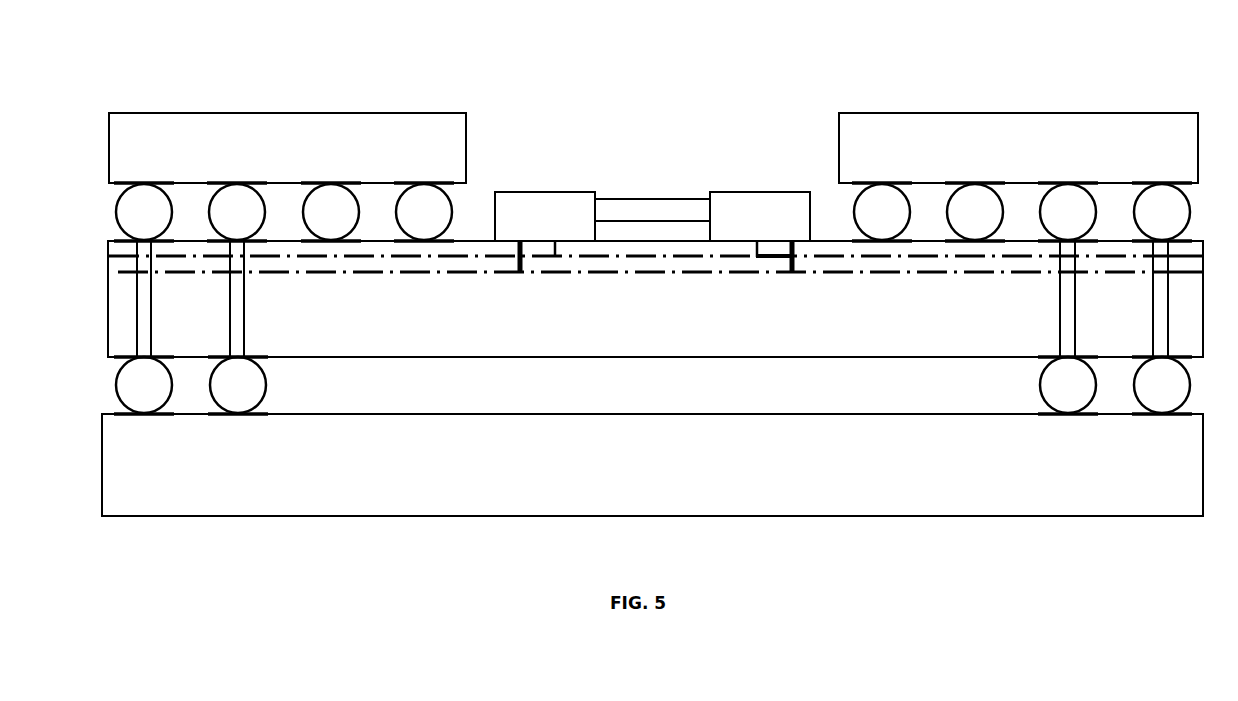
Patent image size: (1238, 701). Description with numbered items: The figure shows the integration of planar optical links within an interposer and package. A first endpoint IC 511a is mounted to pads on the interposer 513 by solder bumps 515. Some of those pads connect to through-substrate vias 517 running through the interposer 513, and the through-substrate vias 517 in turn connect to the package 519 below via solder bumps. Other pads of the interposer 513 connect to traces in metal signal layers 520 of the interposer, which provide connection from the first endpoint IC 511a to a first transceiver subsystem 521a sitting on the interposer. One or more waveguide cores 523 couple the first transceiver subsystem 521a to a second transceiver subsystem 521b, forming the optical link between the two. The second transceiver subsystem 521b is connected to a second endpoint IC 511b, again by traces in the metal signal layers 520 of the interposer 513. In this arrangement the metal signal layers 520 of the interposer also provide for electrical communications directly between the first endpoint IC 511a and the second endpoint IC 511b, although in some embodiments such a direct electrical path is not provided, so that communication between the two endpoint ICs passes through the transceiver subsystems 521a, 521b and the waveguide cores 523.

The first endpoint IC 511a is at (236, 113).
The second endpoint IC 511b is at (990, 113).
The interposer 513 is at (537, 357).
The solder bumps 515 is at (335, 183).
The through-substrate vias 517 is at (244, 295).
The package 519 is at (266, 381).
The metal signal layers 520 is at (640, 270).
The first transceiver subsystem 521a is at (536, 192).
The second transceiver subsystem 521b is at (756, 191).
The waveguide cores 523 is at (650, 199).